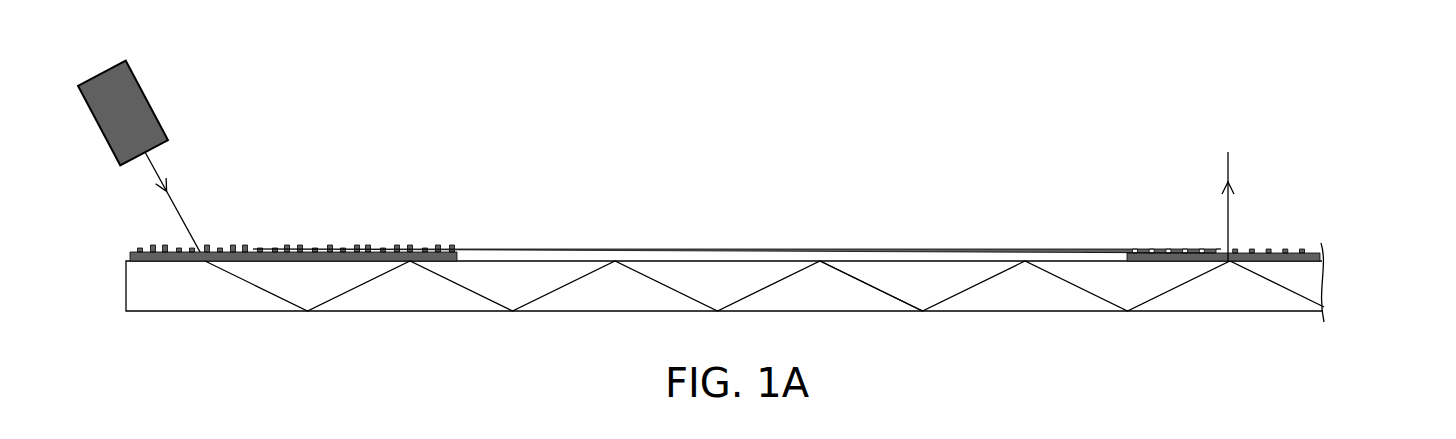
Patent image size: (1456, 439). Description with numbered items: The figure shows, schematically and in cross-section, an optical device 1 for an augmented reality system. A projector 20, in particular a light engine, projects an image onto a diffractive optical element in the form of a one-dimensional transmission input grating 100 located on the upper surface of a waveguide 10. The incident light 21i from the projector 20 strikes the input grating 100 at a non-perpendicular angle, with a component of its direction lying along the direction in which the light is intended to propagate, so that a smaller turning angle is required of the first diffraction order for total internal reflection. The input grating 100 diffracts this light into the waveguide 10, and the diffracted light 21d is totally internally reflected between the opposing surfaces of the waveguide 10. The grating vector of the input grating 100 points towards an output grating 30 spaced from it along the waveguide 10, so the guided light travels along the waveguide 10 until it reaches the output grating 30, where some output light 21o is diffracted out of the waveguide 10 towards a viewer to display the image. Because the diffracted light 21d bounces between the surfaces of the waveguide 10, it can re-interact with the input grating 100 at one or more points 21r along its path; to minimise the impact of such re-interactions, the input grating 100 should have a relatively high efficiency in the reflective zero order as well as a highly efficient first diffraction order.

The optical device 1 is at (979, 176).
The waveguide 10 is at (737, 259).
The projector 20 is at (154, 95).
The incident light 21i is at (147, 189).
The re-interaction points 21r is at (411, 270).
The diffracted light 21d is at (867, 284).
The output light 21o is at (1245, 183).
The output grating 30 is at (1148, 249).
The one-dimensional transmission input grating 100 is at (334, 244).